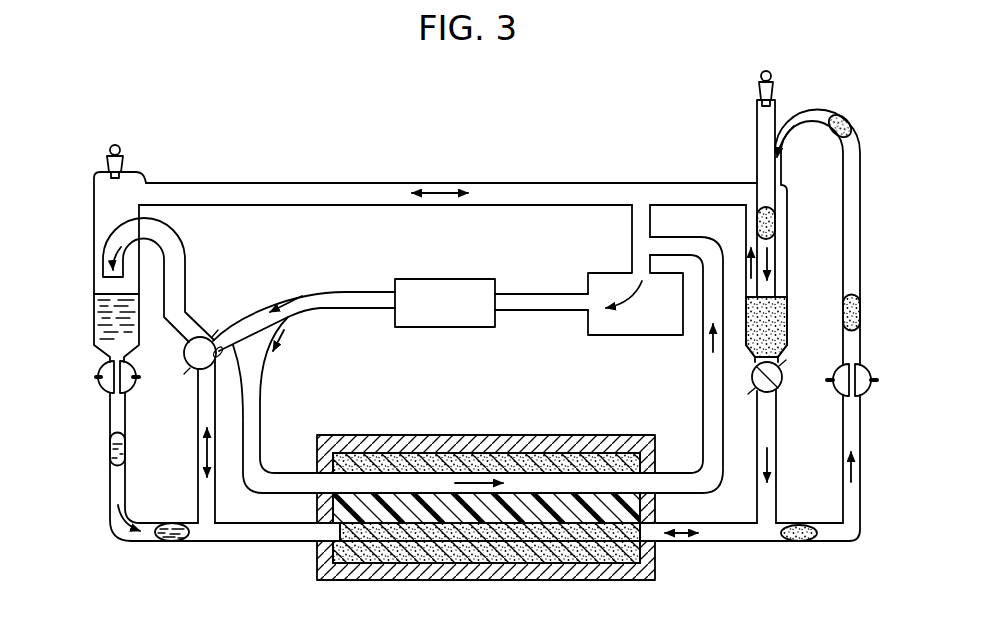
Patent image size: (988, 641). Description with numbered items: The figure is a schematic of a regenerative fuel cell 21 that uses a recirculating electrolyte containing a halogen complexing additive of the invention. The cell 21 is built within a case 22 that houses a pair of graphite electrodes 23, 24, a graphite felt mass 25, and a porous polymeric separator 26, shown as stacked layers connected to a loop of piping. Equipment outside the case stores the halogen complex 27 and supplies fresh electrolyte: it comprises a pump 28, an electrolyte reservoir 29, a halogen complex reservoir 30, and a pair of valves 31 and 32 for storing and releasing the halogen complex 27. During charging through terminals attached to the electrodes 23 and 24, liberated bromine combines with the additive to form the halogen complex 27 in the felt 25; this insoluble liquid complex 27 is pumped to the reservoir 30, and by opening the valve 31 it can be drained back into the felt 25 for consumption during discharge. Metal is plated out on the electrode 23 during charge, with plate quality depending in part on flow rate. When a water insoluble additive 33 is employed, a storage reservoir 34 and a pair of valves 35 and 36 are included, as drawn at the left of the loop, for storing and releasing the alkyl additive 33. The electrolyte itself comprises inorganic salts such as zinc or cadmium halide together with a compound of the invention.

The cell 21 is at (304, 590).
The case 22 is at (659, 574).
The graphite electrode 23 is at (495, 462).
The graphite electrode 24 is at (477, 561).
The graphite felt mass 25 is at (418, 536).
The porous polymeric separator 26 is at (557, 513).
The halogen complex 27 is at (788, 343).
The pump 28 is at (460, 313).
The electrolyte reservoir 29 is at (669, 319).
The halogen complex reservoir 30 is at (788, 283).
The valve 31 is at (781, 390).
The valve 32 is at (862, 394).
The water insoluble additive 33 is at (96, 312).
The storage reservoir 34 is at (95, 274).
The valve 35 is at (104, 386).
The valve 36 is at (211, 333).